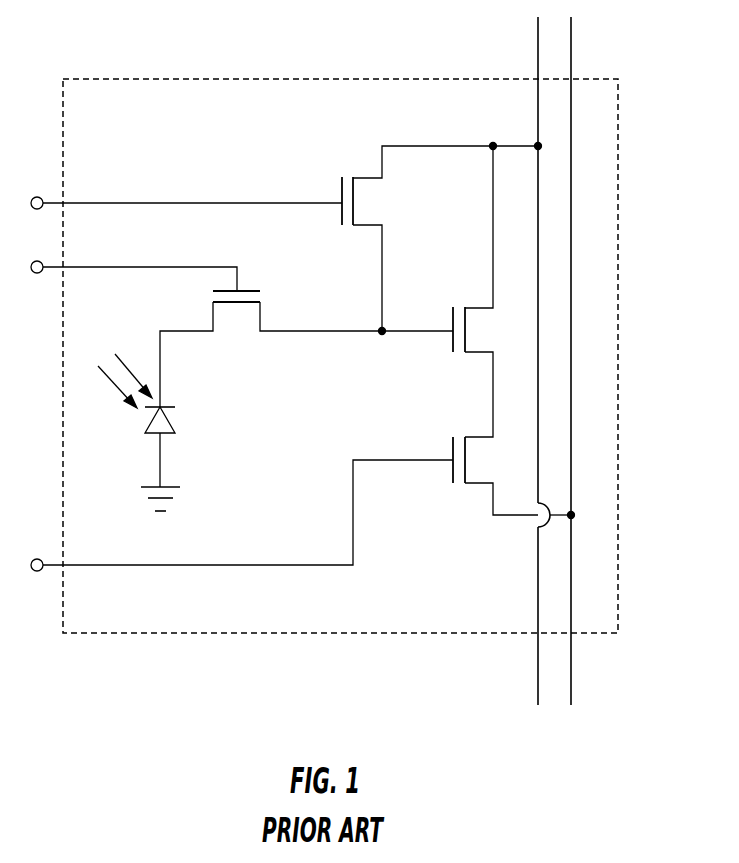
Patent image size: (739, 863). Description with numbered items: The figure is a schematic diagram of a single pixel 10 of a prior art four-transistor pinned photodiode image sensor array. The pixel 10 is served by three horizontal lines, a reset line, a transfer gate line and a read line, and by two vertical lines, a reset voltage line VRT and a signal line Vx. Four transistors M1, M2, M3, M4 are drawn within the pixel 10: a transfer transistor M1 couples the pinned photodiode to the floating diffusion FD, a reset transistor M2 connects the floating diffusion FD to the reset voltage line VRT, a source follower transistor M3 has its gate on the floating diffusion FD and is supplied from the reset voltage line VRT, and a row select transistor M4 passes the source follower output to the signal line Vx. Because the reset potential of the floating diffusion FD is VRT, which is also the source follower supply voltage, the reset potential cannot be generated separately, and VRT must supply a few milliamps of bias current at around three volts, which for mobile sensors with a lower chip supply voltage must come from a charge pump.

The pixel 10 is at (588, 318).
The transfer transistor M1 is at (297, 330).
The reset transistor M2 is at (442, 237).
The source follower transistor M3 is at (461, 291).
The row select transistor M4 is at (503, 481).
The floating diffusion FD is at (395, 349).
The reset voltage line VRT is at (510, 361).
The signal line Vx is at (586, 362).